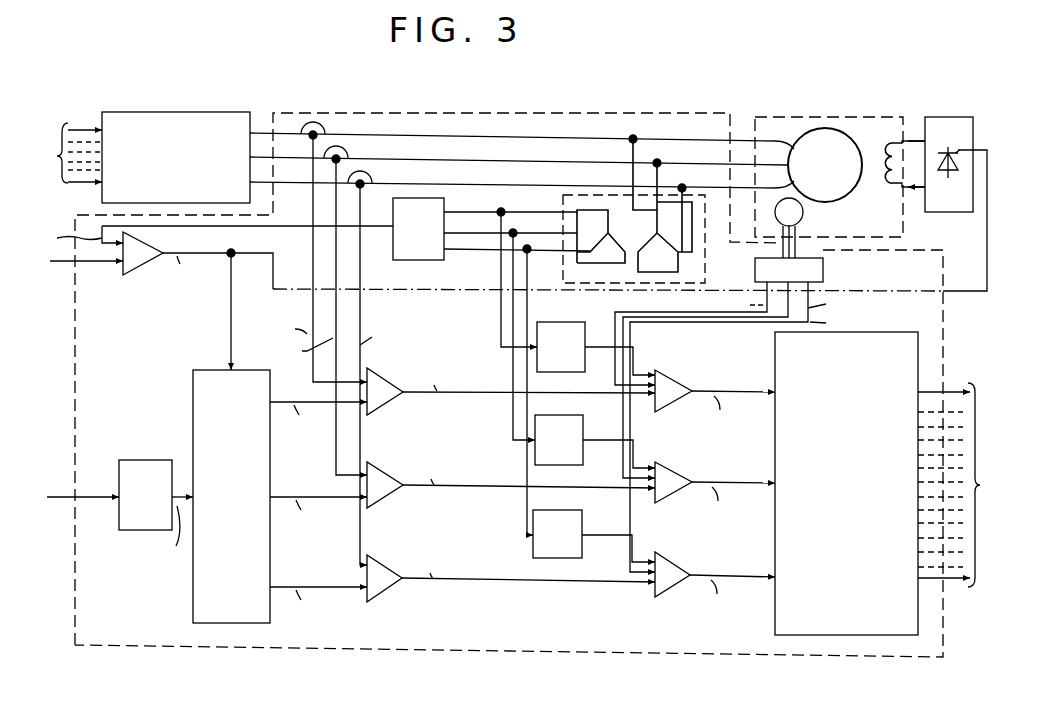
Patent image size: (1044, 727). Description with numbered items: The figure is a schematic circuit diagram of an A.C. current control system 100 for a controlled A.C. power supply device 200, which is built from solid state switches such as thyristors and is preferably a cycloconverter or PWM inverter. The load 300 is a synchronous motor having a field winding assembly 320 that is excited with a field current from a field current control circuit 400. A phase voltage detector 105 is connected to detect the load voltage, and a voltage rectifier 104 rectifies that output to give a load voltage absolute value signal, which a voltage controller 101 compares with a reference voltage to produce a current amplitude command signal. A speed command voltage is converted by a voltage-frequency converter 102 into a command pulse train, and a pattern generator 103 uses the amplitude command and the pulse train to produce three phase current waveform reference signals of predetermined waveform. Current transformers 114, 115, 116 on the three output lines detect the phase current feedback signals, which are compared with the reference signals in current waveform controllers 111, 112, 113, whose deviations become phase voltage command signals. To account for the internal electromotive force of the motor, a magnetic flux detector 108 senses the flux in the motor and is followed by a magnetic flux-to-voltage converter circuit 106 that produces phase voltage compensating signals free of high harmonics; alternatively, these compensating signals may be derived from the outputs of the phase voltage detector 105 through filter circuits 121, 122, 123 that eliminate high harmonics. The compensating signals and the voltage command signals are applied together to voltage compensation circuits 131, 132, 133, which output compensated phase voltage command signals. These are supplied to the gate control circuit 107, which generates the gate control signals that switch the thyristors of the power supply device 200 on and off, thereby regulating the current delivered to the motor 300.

The A.C. current control system 100 is at (815, 660).
The voltage controller 101 is at (140, 268).
The voltage-frequency converter 102 is at (137, 530).
The pattern generator 103 is at (193, 590).
The voltage rectifier 104 is at (414, 260).
The phase voltage detector 105 is at (705, 244).
The magnetic flux-to-voltage converter circuit 106 is at (823, 272).
The gate control circuit 107 is at (783, 635).
The magnetic flux detector 108 is at (804, 208).
The current waveform controller 111 is at (382, 408).
The current waveform controller 112 is at (382, 500).
The current waveform controller 113 is at (382, 594).
The current transformer 114 is at (330, 124).
The current transformer 115 is at (348, 153).
The current transformer 116 is at (374, 178).
The filter circuit 121 is at (551, 372).
The filter circuit 122 is at (549, 465).
The filter circuit 123 is at (548, 558).
The voltage compensation circuit 131 is at (675, 408).
The voltage compensation circuit 132 is at (673, 500).
The voltage compensation circuit 133 is at (672, 593).
The A.C. power supply device 200 is at (182, 112).
The synchronous motor 300 is at (810, 117).
The field winding assembly 320 is at (880, 185).
The field current control circuit 400 is at (973, 120).